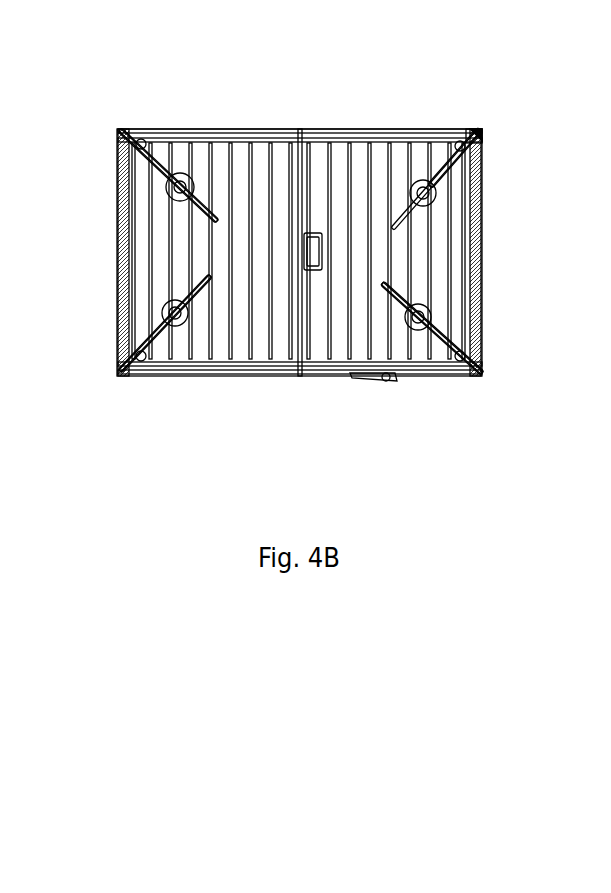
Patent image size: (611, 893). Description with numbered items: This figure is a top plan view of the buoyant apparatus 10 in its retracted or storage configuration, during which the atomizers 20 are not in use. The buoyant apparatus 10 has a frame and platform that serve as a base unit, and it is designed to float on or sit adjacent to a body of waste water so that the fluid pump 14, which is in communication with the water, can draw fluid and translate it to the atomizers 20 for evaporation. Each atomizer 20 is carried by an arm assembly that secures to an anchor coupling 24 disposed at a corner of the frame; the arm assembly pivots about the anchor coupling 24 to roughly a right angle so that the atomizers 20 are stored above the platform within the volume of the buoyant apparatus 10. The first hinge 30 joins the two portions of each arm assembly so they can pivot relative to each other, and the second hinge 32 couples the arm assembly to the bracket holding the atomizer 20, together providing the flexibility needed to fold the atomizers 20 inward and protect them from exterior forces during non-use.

The buoyant apparatus 10 is at (478, 240).
The fluid pump 14 is at (386, 378).
The atomizer 20 is at (444, 137).
The anchor coupling 24 is at (481, 129).
The first hinge 30 is at (447, 164).
The second hinge 32 is at (398, 228).